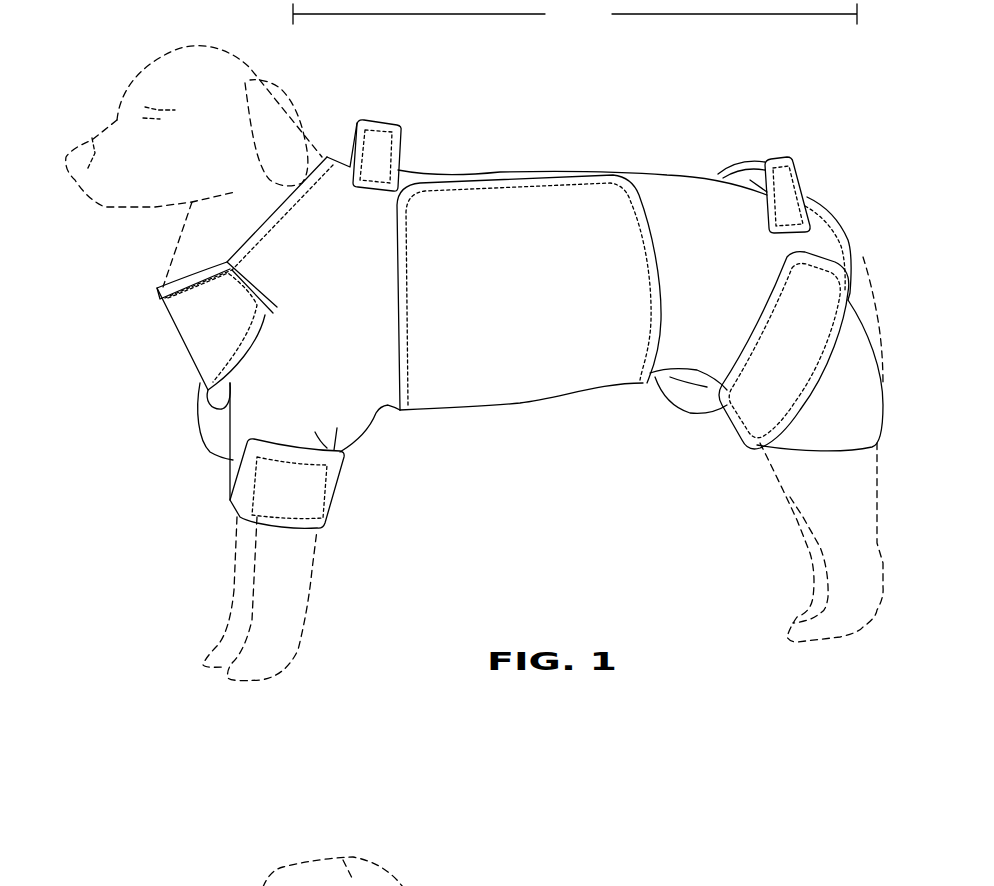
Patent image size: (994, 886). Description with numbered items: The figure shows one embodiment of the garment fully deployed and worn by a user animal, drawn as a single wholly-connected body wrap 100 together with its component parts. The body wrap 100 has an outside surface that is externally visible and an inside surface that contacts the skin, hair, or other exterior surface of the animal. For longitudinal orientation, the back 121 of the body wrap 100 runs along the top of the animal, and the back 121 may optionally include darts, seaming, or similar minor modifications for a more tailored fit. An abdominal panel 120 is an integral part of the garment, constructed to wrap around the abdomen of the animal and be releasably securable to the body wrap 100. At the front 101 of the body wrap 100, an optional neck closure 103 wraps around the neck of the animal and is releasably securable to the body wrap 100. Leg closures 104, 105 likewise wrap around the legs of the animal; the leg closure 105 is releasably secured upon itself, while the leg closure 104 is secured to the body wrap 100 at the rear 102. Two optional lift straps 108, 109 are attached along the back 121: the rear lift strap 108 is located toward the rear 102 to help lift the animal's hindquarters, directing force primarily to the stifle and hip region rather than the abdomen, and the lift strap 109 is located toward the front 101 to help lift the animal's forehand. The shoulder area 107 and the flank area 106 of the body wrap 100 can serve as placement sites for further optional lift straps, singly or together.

The body wrap 100 is at (575, 15).
The front 101 is at (150, 282).
The rear 102 is at (863, 257).
The neck closure 103 is at (217, 308).
The leg closure 104 is at (803, 330).
The leg closure 105 is at (287, 502).
The flank area 106 is at (687, 213).
The shoulder area 107 is at (375, 317).
The rear lift strap 108 is at (787, 173).
The lift strap 109 is at (380, 140).
The abdominal panel 120 is at (582, 330).
The back 121 is at (503, 173).